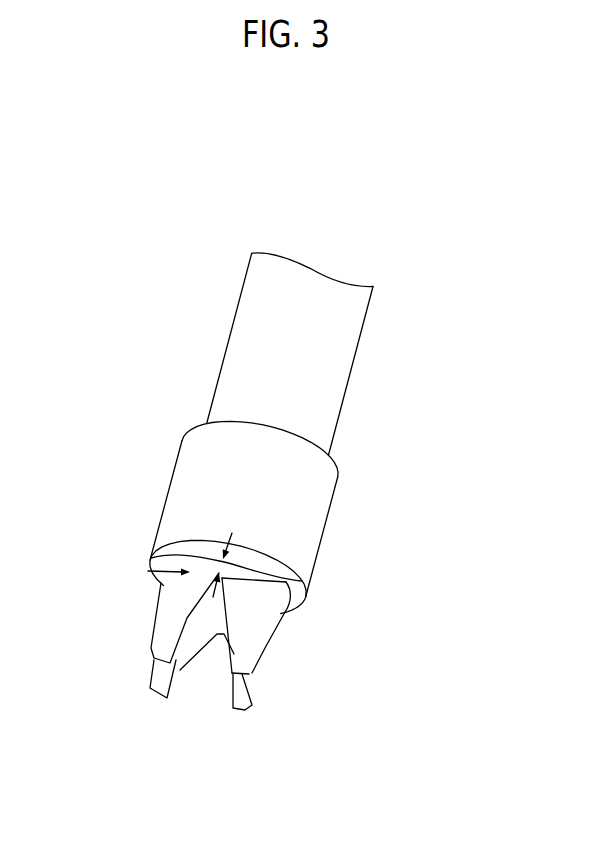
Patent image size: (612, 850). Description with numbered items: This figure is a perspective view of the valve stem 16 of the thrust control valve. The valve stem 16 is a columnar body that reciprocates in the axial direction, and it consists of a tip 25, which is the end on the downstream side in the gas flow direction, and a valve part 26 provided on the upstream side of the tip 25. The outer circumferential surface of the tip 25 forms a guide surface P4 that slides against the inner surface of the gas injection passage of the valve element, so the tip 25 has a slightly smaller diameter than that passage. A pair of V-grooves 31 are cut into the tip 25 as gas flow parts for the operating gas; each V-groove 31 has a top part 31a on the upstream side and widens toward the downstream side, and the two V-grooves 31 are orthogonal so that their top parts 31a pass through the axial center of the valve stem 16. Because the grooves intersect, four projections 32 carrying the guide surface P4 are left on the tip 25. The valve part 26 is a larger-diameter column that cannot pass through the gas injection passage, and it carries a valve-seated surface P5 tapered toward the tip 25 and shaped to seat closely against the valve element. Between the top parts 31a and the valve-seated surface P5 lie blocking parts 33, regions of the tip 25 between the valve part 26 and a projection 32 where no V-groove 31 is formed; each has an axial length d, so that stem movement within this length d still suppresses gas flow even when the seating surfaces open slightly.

The valve stem 16 is at (374, 320).
The valve part 26 is at (326, 521).
The blocking part 33 is at (150, 560).
The valve-seated surface P5 is at (148, 572).
The guide surface P4 is at (167, 625).
The length d is at (300, 582).
The tip 25 is at (258, 665).
The top part 31a is at (216, 640).
The V-groove 31 is at (233, 698).
The projection 32 is at (151, 650).